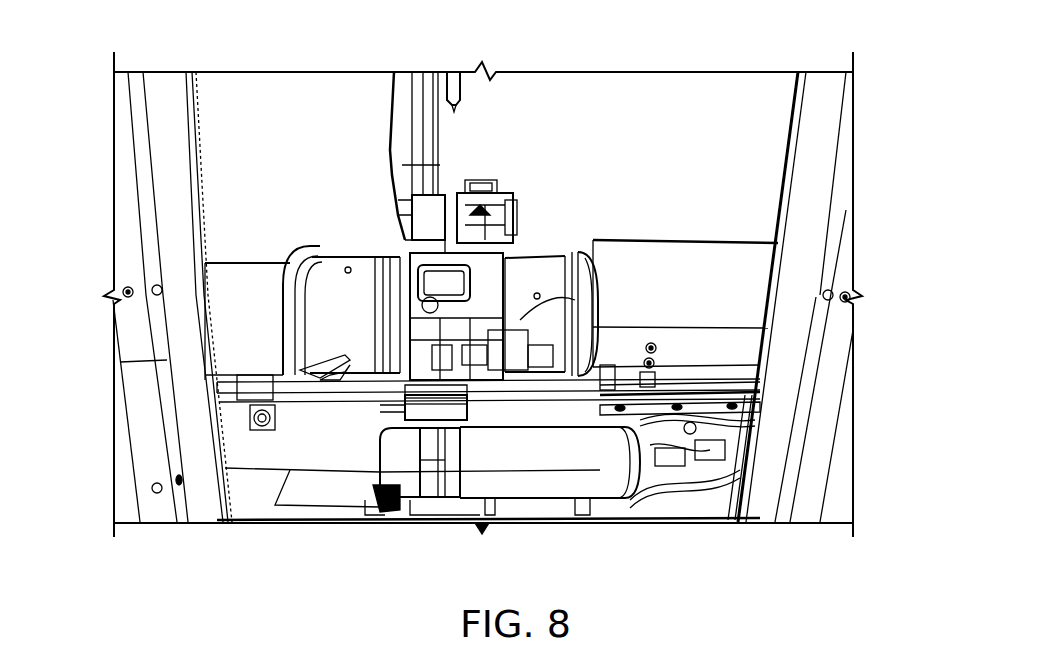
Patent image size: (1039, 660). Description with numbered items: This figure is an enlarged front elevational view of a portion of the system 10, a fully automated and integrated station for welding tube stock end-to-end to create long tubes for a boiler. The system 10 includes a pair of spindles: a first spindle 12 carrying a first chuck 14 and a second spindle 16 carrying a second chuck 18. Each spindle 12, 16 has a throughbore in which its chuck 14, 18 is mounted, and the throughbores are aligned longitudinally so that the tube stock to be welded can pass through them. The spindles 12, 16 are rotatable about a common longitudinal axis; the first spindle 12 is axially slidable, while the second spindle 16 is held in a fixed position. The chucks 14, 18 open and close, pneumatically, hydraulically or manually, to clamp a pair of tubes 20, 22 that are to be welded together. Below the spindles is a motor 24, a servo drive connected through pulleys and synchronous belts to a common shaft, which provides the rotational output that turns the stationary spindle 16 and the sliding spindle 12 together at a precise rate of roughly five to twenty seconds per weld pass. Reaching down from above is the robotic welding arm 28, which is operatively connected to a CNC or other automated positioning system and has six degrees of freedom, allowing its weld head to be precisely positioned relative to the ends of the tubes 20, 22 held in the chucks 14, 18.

The system 10 is at (752, 42).
The first spindle 12 is at (258, 290).
The first chuck 14 is at (354, 275).
The second spindle 16 is at (688, 265).
The second chuck 18 is at (526, 272).
The tube 20 is at (420, 337).
The tube 22 is at (458, 337).
The motor 24 is at (532, 490).
The robotic welding arm 28 is at (402, 96).